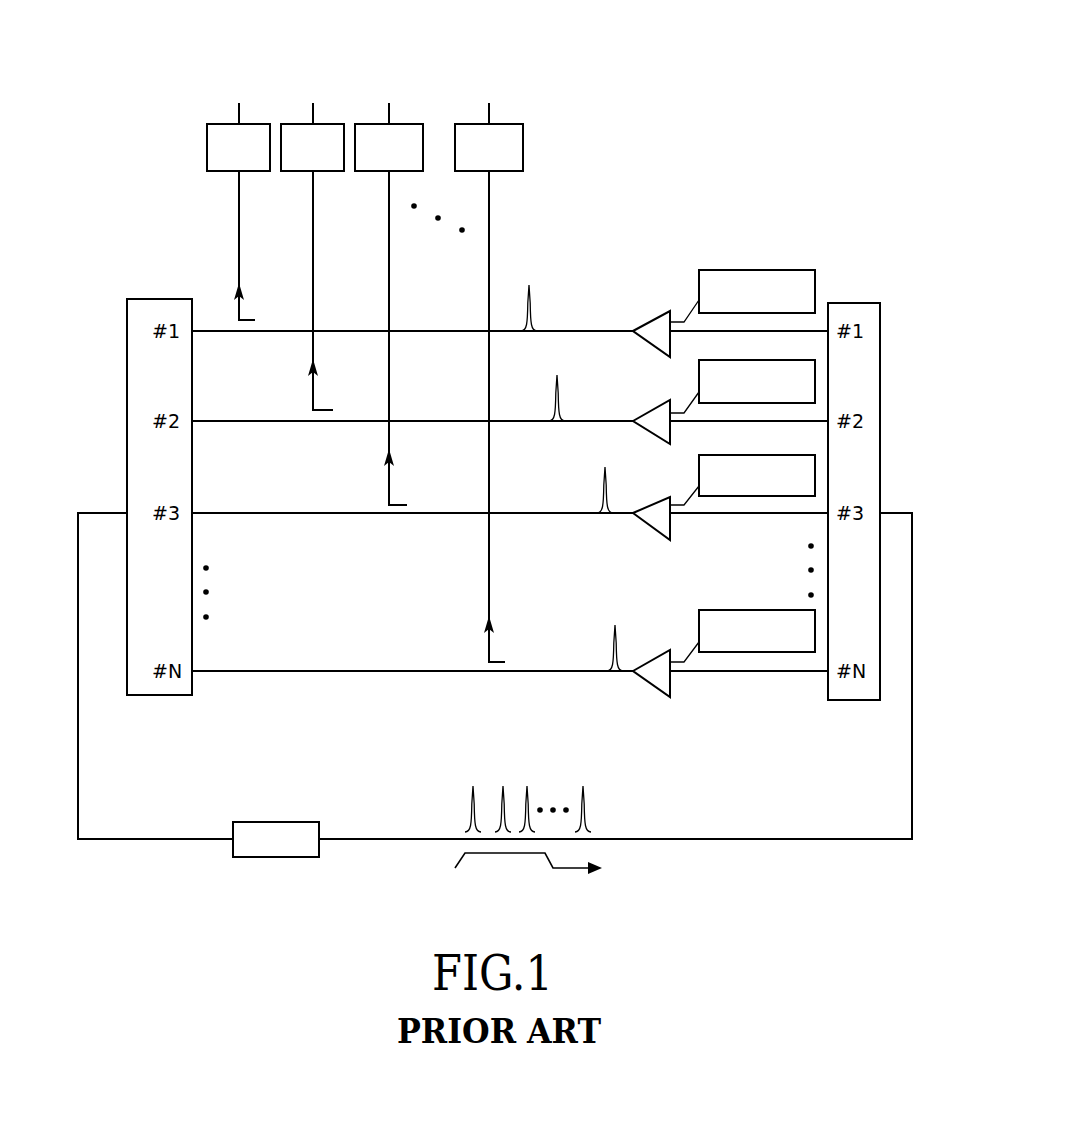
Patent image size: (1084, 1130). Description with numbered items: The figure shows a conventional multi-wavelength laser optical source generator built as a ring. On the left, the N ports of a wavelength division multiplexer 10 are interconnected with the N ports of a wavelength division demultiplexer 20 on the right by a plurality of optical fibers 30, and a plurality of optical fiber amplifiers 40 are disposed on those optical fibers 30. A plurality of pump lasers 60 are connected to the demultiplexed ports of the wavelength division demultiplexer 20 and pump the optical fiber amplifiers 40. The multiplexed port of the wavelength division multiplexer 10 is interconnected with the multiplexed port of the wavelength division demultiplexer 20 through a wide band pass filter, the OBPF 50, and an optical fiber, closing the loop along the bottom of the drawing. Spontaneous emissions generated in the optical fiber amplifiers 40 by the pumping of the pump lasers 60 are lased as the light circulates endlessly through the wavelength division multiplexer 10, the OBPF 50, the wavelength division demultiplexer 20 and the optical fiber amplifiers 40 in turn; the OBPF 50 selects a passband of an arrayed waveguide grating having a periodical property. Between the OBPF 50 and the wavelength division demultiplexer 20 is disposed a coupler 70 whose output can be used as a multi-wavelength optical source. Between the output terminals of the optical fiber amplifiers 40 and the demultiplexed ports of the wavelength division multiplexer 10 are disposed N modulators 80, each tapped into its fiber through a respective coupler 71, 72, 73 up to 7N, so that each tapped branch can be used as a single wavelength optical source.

The wavelength division multiplexer 10 is at (127, 322).
The wavelength division demultiplexer 20 is at (880, 330).
The optical fibers 30 is at (587, 326).
The optical fiber amplifiers 40 is at (649, 321).
The OBPF 50 is at (280, 858).
The pump lasers 60 is at (745, 270).
The coupler 70 is at (570, 877).
The coupler 71 is at (232, 280).
The coupler 72 is at (306, 357).
The coupler 73 is at (378, 453).
The coupler 7N is at (480, 620).
The modulators 80 is at (497, 40).